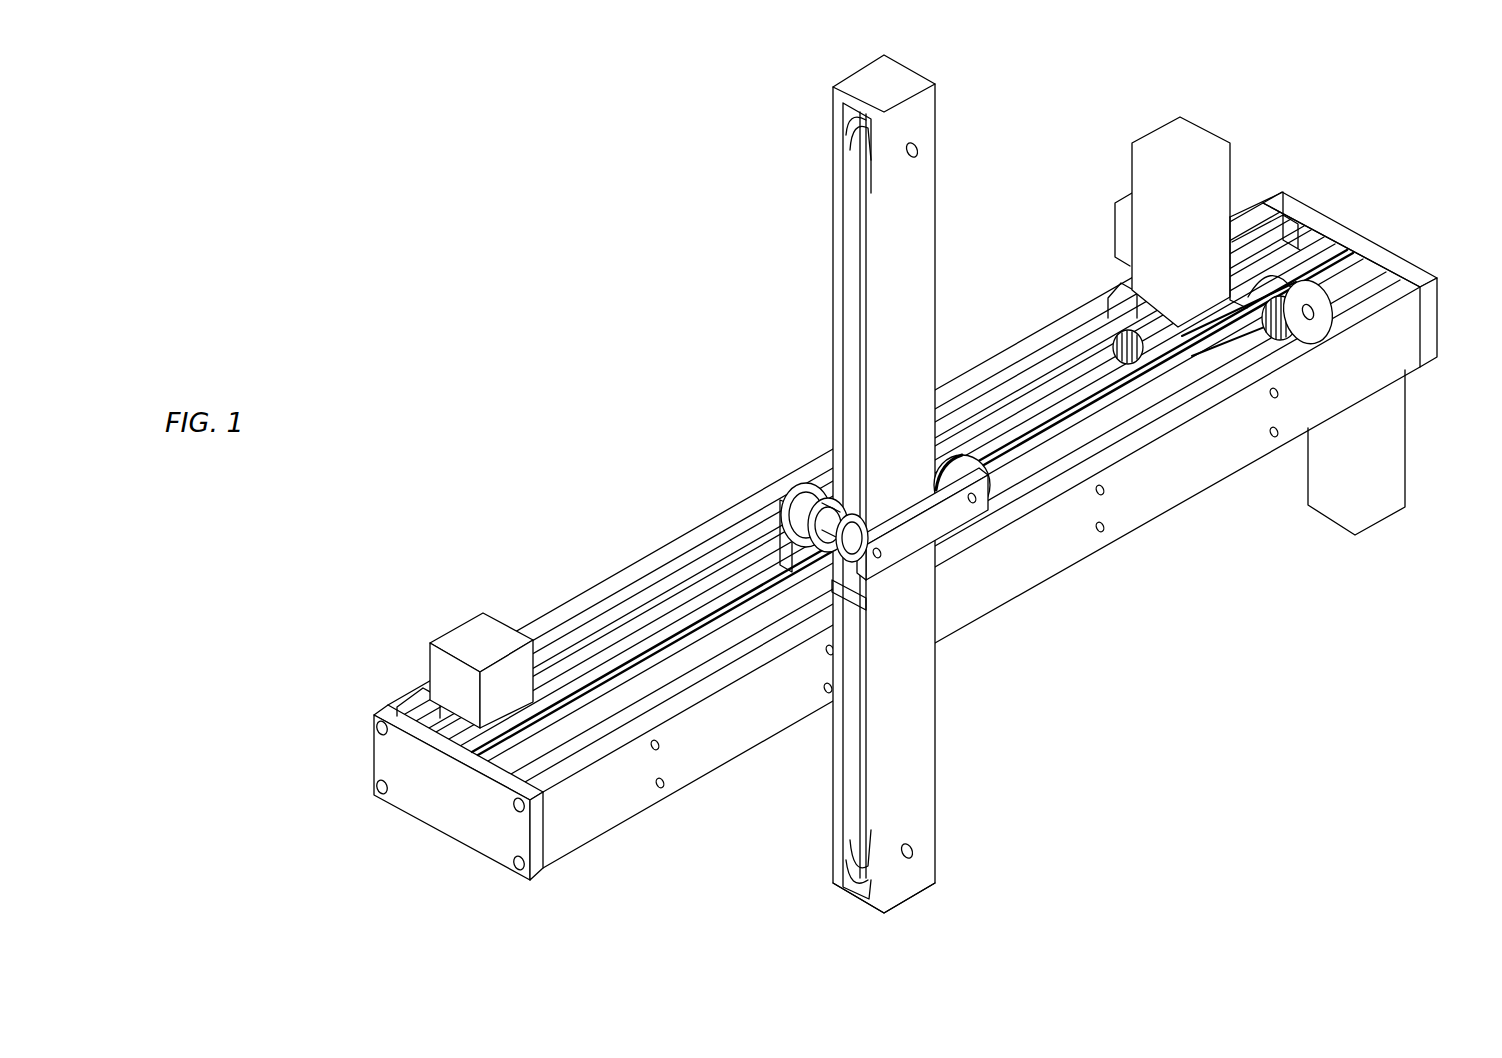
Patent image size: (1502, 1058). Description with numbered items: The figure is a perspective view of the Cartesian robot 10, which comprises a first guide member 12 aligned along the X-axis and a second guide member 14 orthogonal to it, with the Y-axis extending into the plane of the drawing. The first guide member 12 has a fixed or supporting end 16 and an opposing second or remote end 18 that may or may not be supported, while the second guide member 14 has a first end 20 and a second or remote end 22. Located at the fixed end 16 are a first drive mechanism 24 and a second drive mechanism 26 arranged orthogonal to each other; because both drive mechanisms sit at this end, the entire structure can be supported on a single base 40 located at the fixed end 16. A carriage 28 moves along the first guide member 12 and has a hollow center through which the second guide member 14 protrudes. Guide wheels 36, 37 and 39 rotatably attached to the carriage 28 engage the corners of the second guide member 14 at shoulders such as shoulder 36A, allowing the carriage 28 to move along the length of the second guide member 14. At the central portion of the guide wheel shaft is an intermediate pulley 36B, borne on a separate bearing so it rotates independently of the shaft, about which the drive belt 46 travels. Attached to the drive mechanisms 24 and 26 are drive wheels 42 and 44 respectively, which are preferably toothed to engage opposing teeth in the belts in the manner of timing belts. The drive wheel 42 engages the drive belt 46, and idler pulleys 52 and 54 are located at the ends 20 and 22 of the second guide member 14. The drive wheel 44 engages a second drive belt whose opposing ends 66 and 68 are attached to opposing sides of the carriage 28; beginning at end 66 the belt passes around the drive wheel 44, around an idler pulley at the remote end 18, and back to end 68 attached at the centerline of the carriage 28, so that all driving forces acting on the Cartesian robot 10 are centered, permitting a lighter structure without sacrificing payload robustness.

The Cartesian robot 10 is at (1284, 605).
The first guide member 12 is at (722, 818).
The second guide member 14 is at (962, 180).
The fixed or supporting end 16 is at (1392, 262).
The second or remote end 18 is at (440, 812).
The first end 20 is at (910, 886).
The second or remote end 22 is at (858, 82).
The first drive mechanism 24 is at (1265, 245).
The second drive mechanism 26 is at (1145, 183).
The carriage 28 is at (981, 609).
The guide wheel 36 is at (795, 488).
The shoulder 36A is at (817, 492).
The intermediate pulley 36B is at (803, 500).
The guide wheel 37 is at (960, 468).
The guide wheel 39 is at (770, 553).
The base 40 is at (1383, 428).
The drive wheel 42 is at (1320, 290).
The drive wheel 44 is at (1128, 330).
The drive belt 46 is at (850, 223).
The idler pulley 52 is at (840, 888).
The idler pulley 54 is at (868, 160).
The end of drive belt 66 is at (990, 507).
The end of drive belt 68 is at (853, 583).